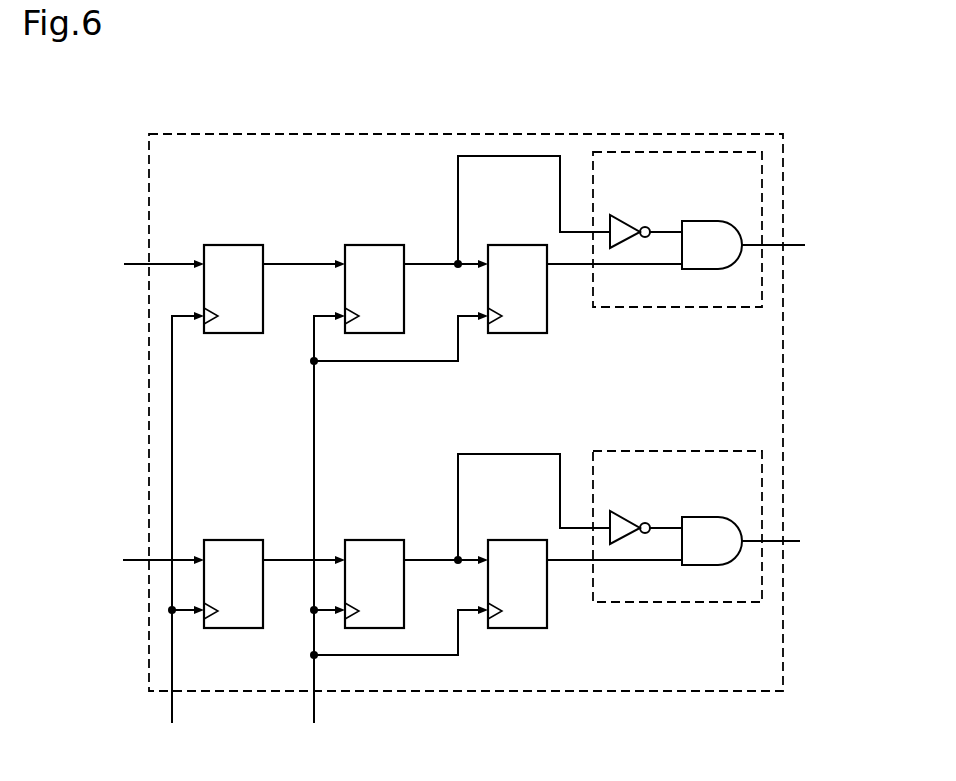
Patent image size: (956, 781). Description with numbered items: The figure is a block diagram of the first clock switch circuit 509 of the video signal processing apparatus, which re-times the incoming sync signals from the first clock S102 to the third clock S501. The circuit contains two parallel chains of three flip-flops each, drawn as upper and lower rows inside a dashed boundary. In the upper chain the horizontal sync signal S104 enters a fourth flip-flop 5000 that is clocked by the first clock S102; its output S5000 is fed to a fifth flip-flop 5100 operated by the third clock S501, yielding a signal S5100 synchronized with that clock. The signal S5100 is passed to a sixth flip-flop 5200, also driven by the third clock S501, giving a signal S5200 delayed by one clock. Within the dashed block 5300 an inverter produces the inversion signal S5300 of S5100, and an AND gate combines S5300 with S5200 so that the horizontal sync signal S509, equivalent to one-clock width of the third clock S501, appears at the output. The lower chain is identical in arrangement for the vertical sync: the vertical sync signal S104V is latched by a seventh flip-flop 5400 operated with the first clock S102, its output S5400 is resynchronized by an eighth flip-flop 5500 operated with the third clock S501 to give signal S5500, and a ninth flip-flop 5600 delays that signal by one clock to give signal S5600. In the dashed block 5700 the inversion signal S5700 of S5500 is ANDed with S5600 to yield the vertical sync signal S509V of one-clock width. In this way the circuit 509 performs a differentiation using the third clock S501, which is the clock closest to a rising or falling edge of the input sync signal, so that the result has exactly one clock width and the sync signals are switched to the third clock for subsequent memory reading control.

The first clock switch circuit 509 is at (725, 133).
The fourth flip-flop 5000 is at (220, 245).
The fifth flip-flop 5100 is at (358, 245).
The sixth flip-flop 5200 is at (512, 245).
The seventh flip-flop 5400 is at (216, 540).
The eighth flip-flop 5500 is at (358, 540).
The ninth flip-flop 5600 is at (512, 540).
The AND circuit for horizontal sync signal 5300 is at (712, 307).
The AND circuit for vertical sync signal 5700 is at (712, 602).
The horizontal sync signal S104 is at (131, 266).
The vertical sync signal S104V is at (123, 561).
The output of the fourth flip-flop S5000 is at (302, 264).
The signal synchronized with the third clock S5100 is at (437, 264).
The signal delayed by the third clock S5200 is at (558, 264).
The inversion signal of the signal S5100 S5300 is at (667, 230).
The horizontal sync signal switched to the third clock S509 is at (804, 248).
The output of the seventh flip-flop S5400 is at (288, 560).
The signal synchronized with the third clock S5500 is at (433, 560).
The signal delayed by the third clock S5600 is at (558, 560).
The inversion signal of the signal S5500 S5700 is at (667, 528).
The vertical sync signal switched to the third clock S509V is at (809, 544).
The first clock S102 is at (174, 534).
The third clock S501 is at (387, 534).